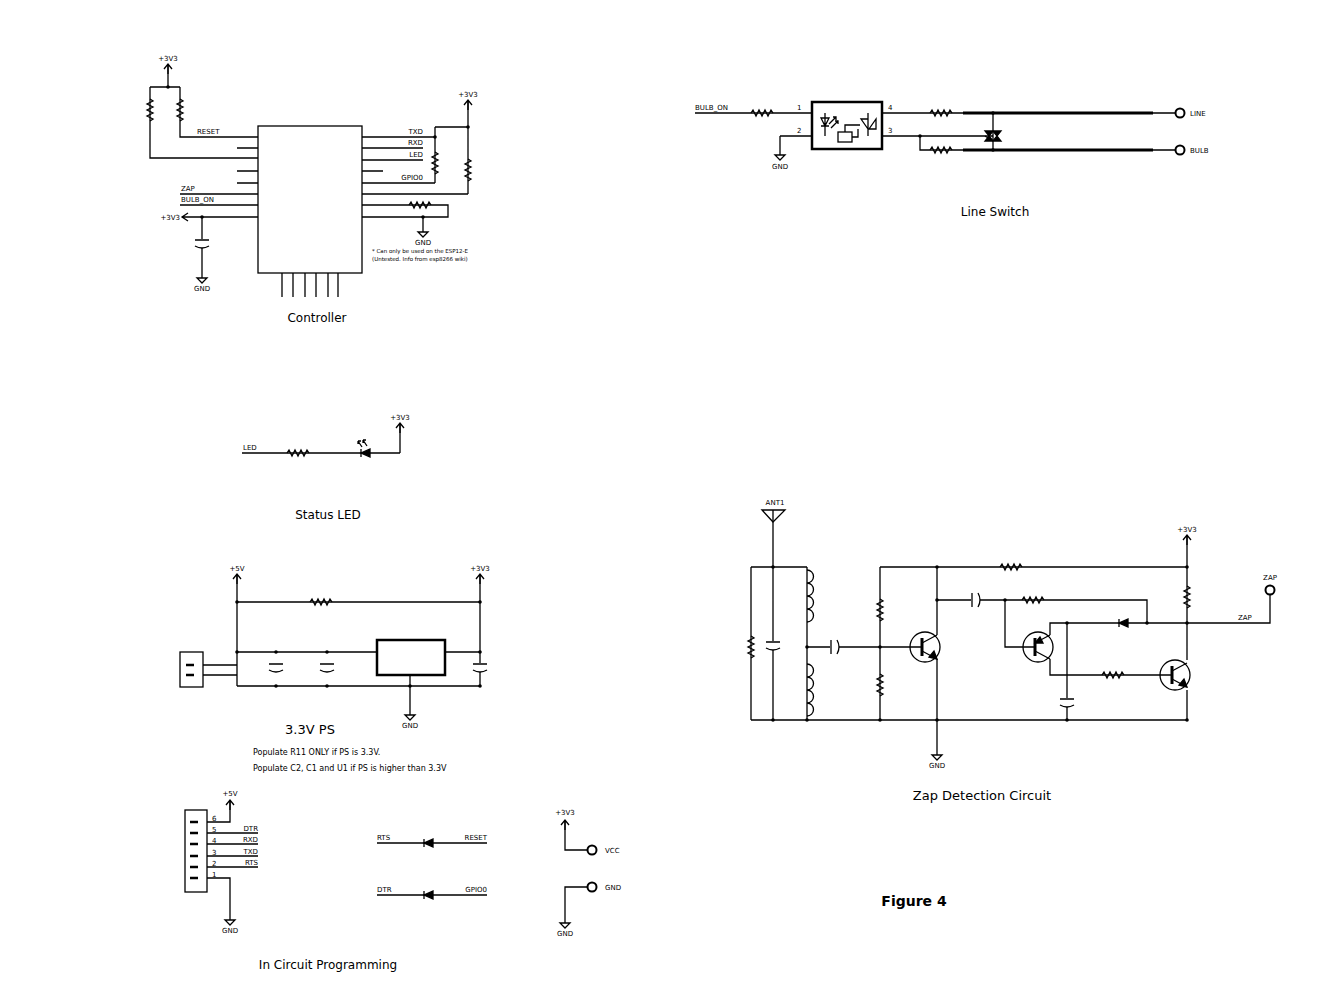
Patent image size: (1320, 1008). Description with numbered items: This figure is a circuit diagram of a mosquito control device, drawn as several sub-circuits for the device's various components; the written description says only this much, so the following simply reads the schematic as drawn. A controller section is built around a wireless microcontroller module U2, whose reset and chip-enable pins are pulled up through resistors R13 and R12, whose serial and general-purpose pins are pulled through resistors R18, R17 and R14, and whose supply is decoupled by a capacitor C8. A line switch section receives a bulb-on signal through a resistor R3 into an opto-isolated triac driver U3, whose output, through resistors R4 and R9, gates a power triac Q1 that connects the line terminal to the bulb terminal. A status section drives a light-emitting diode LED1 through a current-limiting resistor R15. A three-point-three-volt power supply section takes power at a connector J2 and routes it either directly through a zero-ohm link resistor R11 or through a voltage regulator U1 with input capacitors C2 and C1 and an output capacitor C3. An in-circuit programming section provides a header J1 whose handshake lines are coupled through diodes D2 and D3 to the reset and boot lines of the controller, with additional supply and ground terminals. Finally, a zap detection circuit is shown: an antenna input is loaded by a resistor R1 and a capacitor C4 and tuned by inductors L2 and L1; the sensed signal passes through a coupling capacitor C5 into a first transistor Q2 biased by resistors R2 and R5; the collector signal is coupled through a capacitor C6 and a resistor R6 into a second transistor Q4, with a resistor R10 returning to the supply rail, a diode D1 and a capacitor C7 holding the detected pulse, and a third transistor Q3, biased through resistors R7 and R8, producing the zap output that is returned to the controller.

The ESP12E controller module U2 is at (310, 188).
The resistor 10K R13 is at (143, 107).
The resistor 10K R12 is at (188, 107).
The capacitor 100n C8 is at (210, 244).
The resistor 10K R18 is at (443, 163).
The resistor 10K R17 is at (476, 170).
The resistor 4k7 R14 is at (426, 206).
The resistor 330 R3 is at (762, 102).
The FODM3053 optotriac U3 is at (847, 127).
The resistor 360 R4 is at (941, 102).
The resistor 330 R9 is at (941, 162).
The BT134W triac Q1 is at (986, 154).
The resistor 330 R15 is at (298, 442).
The status LED LED1 is at (365, 456).
The power connector J2 is at (195, 663).
The resistor 0R R11 is at (321, 602).
The capacitor 10u C2 is at (286, 669).
The capacitor 330n C1 is at (340, 669).
The capacitor 100n C3 is at (493, 669).
The 78m033 voltage regulator U1 is at (411, 648).
The programming connector J1 is at (195, 846).
The diode 1N4148 D2 is at (428, 829).
The diode 1N4148 D3 is at (428, 882).
The resistor 270K R1 is at (740, 643).
The capacitor 10p C4 is at (780, 646).
The inductor 10mH L2 is at (821, 596).
The inductor 1mH L1 is at (819, 690).
The capacitor 1n C5 is at (839, 644).
The resistor 1M R2 is at (873, 607).
The resistor 270K R5 is at (869, 682).
The MMBT3904 transistor Q2 is at (947, 647).
The capacitor 120p C6 is at (975, 602).
The resistor 10K R10 is at (1011, 567).
The resistor 82k R6 is at (1033, 601).
The MMBT3906 transistor Q4 is at (1021, 654).
The diode 1N4148 D1 is at (1103, 623).
The resistor 1K R7 is at (1195, 597).
The resistor 3k9 R8 is at (1113, 677).
The MMBT3904 transistor Q3 is at (1157, 682).
The capacitor 10u C7 is at (1073, 702).